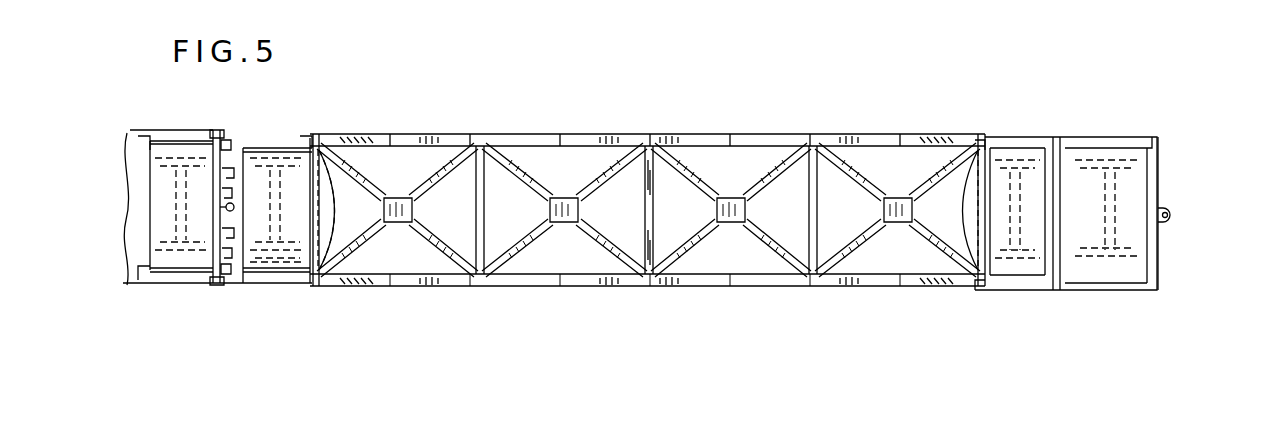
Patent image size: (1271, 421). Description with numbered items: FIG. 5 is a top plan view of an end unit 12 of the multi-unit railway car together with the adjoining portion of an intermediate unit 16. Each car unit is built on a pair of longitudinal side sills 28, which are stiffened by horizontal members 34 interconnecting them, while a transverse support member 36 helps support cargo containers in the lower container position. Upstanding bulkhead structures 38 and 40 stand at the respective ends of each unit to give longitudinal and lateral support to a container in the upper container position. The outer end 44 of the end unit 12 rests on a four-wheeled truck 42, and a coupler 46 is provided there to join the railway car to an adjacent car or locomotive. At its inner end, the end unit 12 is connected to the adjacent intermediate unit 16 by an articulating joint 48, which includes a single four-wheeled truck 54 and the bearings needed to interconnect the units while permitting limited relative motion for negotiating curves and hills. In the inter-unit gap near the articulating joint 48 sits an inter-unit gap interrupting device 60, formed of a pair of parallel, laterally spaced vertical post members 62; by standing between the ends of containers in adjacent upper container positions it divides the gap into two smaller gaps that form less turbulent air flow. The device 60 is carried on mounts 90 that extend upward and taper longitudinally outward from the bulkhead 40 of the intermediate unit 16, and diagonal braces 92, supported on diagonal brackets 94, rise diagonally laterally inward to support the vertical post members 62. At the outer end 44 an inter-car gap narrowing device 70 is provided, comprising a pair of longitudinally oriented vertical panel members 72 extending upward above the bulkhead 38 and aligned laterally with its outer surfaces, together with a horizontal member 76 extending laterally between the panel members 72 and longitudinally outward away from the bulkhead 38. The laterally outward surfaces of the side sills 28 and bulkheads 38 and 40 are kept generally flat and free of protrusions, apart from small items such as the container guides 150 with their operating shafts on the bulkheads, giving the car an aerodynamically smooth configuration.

The end unit 12 is at (706, 122).
The intermediate unit 16 is at (142, 120).
The side sills 28 is at (546, 133).
The horizontal members 34 is at (532, 175).
The transverse support member 36 is at (649, 218).
The bulkhead structure 38 is at (1050, 150).
The bulkhead structure 40 is at (300, 137).
The four-wheeled truck 42 is at (1030, 265).
The outer end 44 is at (1158, 248).
The coupler 46 is at (1172, 212).
The articulating joint 48 is at (226, 208).
The four-wheeled truck 54 is at (290, 265).
The inter-unit gap interrupting device 60 is at (233, 128).
The vertical post members 62 is at (245, 148).
The inter-car gap narrowing device 70 is at (1119, 136).
The vertical panel members 72 is at (1092, 140).
The horizontal member 76 is at (1131, 153).
The mounts 90 is at (212, 145).
The diagonal braces 92 is at (228, 142).
The diagonal brackets 94 is at (216, 130).
The container guides 150 is at (648, 210).